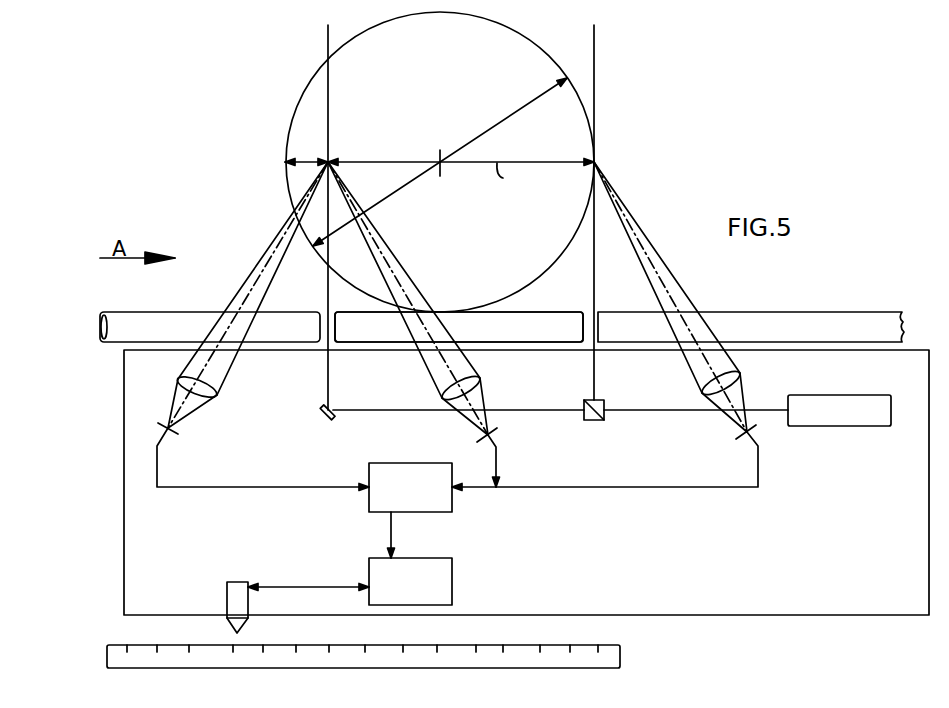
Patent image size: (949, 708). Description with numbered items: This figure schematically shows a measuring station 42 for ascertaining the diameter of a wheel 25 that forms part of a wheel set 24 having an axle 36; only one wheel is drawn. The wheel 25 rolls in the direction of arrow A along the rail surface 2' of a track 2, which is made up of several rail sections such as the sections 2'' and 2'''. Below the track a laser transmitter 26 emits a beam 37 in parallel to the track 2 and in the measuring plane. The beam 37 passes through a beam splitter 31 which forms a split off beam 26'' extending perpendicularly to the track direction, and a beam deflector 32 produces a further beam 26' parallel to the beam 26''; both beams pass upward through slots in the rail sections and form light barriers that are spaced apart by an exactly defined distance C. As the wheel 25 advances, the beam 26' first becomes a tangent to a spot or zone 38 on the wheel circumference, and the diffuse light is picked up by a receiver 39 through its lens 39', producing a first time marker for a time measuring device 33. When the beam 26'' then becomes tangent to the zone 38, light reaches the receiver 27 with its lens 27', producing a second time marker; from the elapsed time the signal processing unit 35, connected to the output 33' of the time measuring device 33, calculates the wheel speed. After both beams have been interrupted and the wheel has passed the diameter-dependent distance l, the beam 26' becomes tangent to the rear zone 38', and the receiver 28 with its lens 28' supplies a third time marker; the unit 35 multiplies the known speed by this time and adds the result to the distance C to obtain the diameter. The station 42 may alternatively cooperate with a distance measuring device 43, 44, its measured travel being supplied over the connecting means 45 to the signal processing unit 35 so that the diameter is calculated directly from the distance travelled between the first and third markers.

The track 2 is at (459, 351).
The rail surface 2' is at (459, 312).
The slot 2'' is at (751, 310).
The tube section 2''' is at (211, 310).
The wheel set 24 is at (300, 68).
The wheel 25 is at (512, 234).
The laser transmitter 26 is at (847, 430).
The beam 26' is at (354, 217).
The split off beam 26'' is at (623, 212).
The receiver 27 is at (615, 431).
The lens 27' is at (670, 297).
The receiver 28 is at (263, 435).
The lens 28' is at (230, 295).
The beam splitter 31 is at (586, 418).
The beam deflector 32 is at (324, 418).
The time measuring device 33 is at (432, 499).
The output 33' is at (411, 535).
The signal processing unit 35 is at (440, 592).
The axle 36 is at (440, 158).
The beam 37 is at (650, 410).
The spot or zone 38 is at (482, 166).
The spot or zone 38' is at (282, 151).
The receiver 39 is at (515, 432).
The lens 39' is at (426, 298).
The measuring station 42 is at (722, 534).
The distance measuring device 43 is at (112, 655).
The distance measuring device 44 is at (232, 598).
The connecting means 45 is at (285, 586).